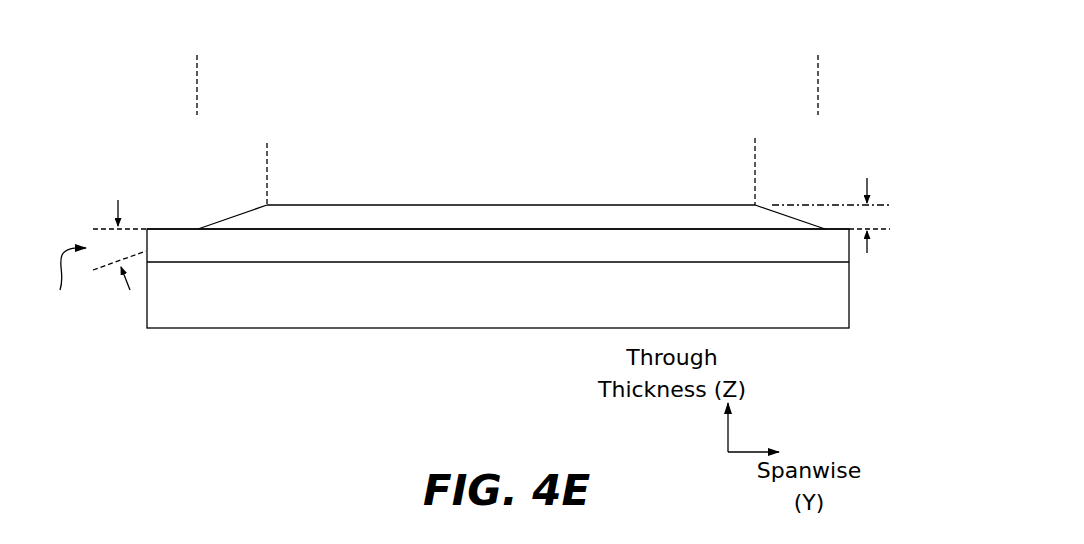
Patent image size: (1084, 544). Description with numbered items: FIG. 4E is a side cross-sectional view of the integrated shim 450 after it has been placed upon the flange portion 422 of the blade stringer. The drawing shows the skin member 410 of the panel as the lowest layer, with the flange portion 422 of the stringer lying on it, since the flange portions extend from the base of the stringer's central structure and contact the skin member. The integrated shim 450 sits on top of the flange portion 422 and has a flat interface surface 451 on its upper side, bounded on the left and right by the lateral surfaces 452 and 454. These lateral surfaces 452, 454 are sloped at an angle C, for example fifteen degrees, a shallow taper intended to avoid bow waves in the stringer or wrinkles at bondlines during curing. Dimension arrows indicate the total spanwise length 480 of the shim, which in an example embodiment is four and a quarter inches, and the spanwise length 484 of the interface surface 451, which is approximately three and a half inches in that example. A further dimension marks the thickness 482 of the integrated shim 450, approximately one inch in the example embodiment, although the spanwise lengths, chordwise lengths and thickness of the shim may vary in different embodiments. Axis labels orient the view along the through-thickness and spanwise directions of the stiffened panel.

The integrated shim 450 is at (132, 82).
The interface surface 451 is at (621, 198).
The lateral surface 452 is at (221, 203).
The lateral surface 454 is at (799, 212).
The total spanwise length 480 is at (198, 81).
The spanwise length of interface surface 484 is at (268, 176).
The thickness 482 is at (891, 216).
The flange portion 422 is at (845, 247).
The skin member 410 is at (252, 317).